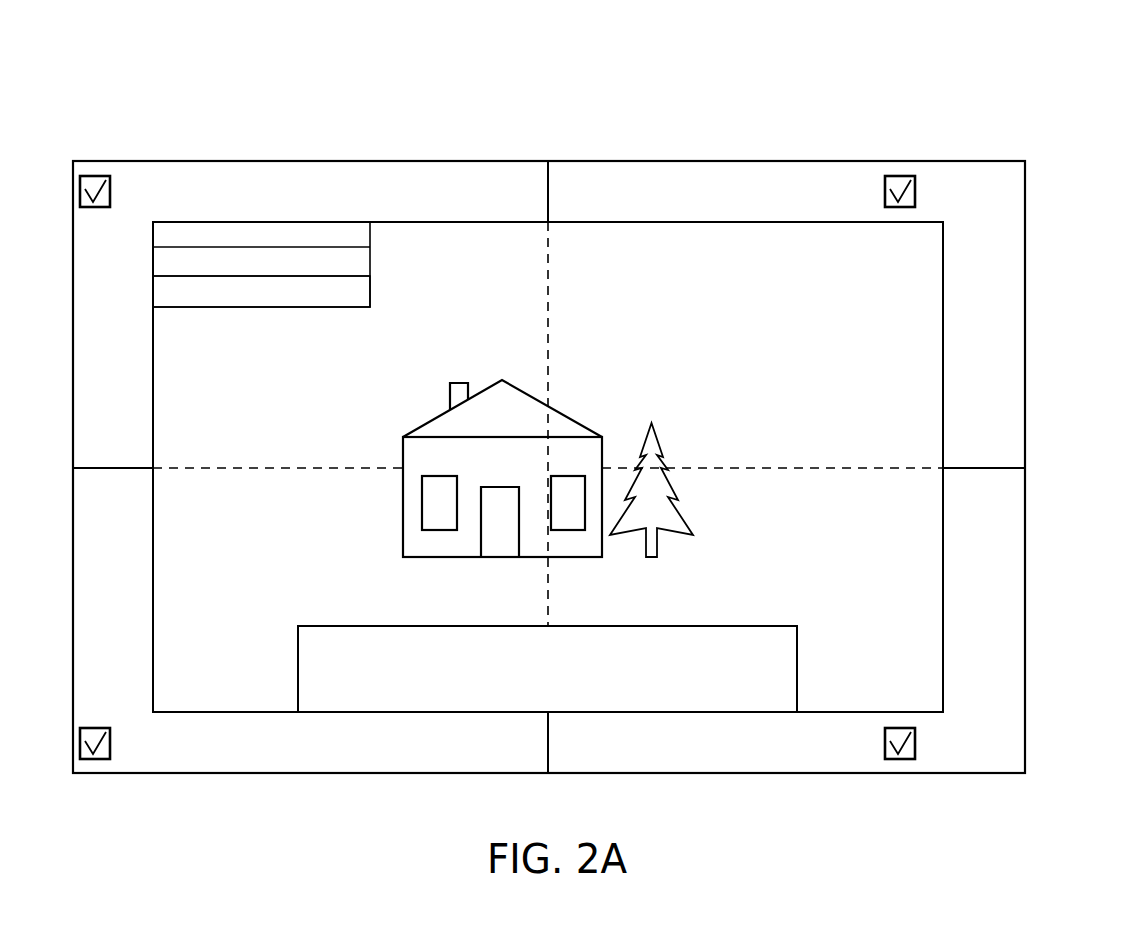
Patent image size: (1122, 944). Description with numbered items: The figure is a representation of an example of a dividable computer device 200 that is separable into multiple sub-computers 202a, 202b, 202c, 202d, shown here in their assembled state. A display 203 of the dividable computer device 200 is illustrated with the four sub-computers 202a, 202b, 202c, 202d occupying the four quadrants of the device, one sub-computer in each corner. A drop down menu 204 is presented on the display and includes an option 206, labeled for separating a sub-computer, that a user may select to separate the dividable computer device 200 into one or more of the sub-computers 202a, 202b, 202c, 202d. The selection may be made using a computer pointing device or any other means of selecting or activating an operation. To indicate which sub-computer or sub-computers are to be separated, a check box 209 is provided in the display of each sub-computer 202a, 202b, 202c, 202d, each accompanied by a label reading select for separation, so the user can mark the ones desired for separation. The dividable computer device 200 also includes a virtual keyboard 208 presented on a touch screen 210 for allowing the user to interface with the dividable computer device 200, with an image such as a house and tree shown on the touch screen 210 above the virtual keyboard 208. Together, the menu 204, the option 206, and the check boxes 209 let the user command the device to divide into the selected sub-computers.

The dividable computer device 200 is at (570, 128).
The sub-computer 202a is at (178, 161).
The sub-computer 202b is at (818, 161).
The sub-computer 202c is at (807, 774).
The sub-computer 202d is at (182, 774).
The display 203 is at (948, 303).
The drop down menu 204 is at (378, 270).
The option 206 is at (264, 308).
The virtual keyboard 208 is at (798, 670).
The check box 209 is at (93, 176).
The touch screen 210 is at (300, 572).